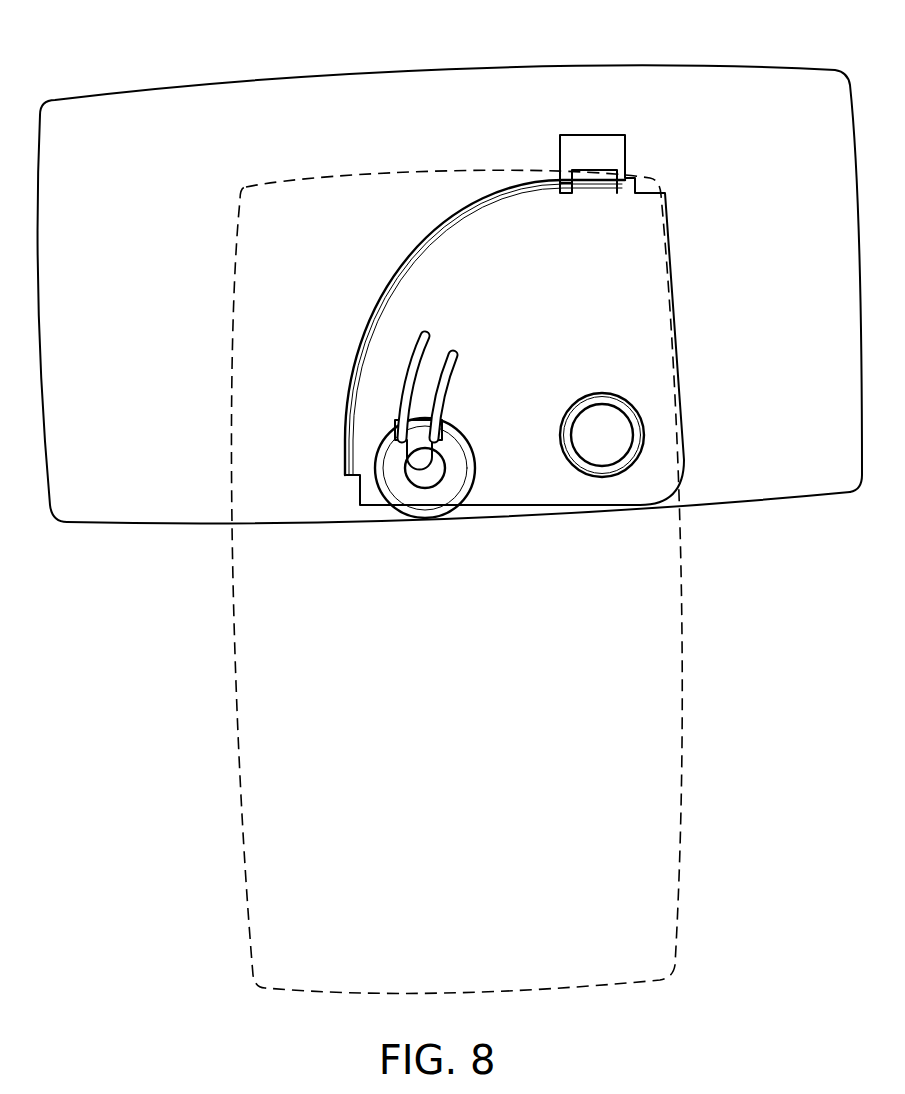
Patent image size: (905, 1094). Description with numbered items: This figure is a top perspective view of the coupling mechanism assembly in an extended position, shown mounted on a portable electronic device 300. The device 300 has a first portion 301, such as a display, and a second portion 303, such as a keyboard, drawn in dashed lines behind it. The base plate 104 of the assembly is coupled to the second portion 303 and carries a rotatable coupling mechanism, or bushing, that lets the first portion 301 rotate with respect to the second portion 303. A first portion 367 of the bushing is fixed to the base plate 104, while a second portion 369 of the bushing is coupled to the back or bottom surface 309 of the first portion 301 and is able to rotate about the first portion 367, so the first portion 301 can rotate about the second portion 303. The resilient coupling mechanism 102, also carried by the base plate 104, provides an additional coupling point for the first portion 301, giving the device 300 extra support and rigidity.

The portable electronic device 300 is at (346, 39).
The first portion 301 is at (782, 498).
The second portion 303 is at (668, 774).
The back portion 309 is at (120, 527).
The base plate 104 is at (655, 241).
The resilient coupling mechanism 102 is at (450, 448).
The first portion of the rotatable coupling mechanism 367 is at (613, 400).
The second portion of the rotatable coupling mechanism 369 is at (592, 415).